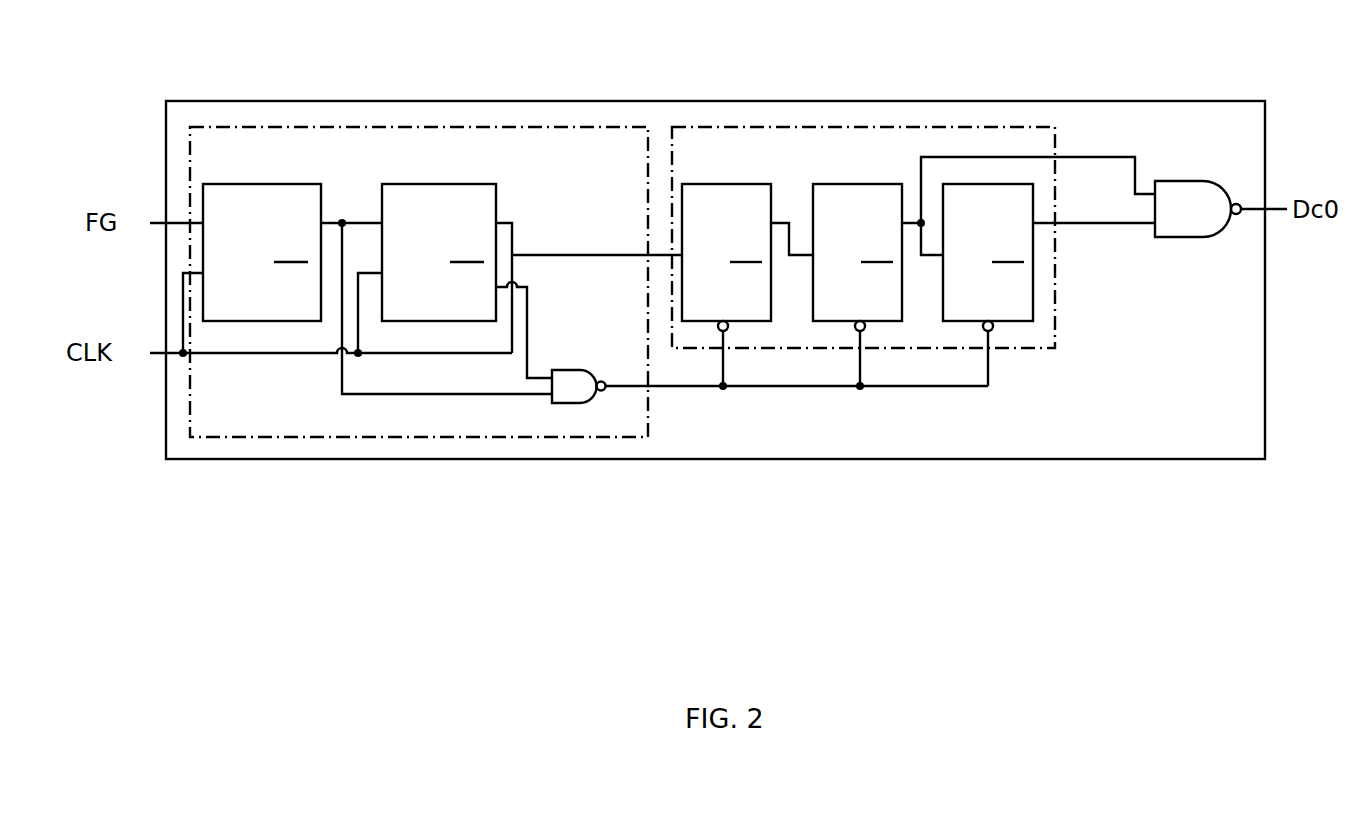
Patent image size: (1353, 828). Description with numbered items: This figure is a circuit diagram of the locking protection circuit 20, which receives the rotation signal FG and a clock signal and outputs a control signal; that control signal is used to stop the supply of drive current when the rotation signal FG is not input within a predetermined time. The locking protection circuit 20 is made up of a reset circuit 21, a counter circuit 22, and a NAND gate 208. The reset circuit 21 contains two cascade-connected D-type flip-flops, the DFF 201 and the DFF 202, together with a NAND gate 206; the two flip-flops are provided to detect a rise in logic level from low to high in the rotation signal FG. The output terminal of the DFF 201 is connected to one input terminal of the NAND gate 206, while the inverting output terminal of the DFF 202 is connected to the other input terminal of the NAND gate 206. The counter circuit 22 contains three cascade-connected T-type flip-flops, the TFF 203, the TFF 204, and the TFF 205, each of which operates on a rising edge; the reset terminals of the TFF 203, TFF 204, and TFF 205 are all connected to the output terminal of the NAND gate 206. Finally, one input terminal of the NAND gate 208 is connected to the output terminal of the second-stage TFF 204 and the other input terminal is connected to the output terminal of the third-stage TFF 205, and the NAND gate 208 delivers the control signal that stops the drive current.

The locking protection circuit 20 is at (1147, 101).
The reset circuit 21 is at (533, 125).
The counter circuit 22 is at (703, 127).
The D-type flip-flop 201 is at (242, 183).
The D-type flip-flop 202 is at (395, 183).
The T-type flip-flop 203 is at (740, 183).
The T-type flip-flop 204 is at (835, 183).
The T-type flip-flop 205 is at (965, 183).
The NAND gate 206 is at (563, 403).
The NAND gate 208 is at (1167, 237).